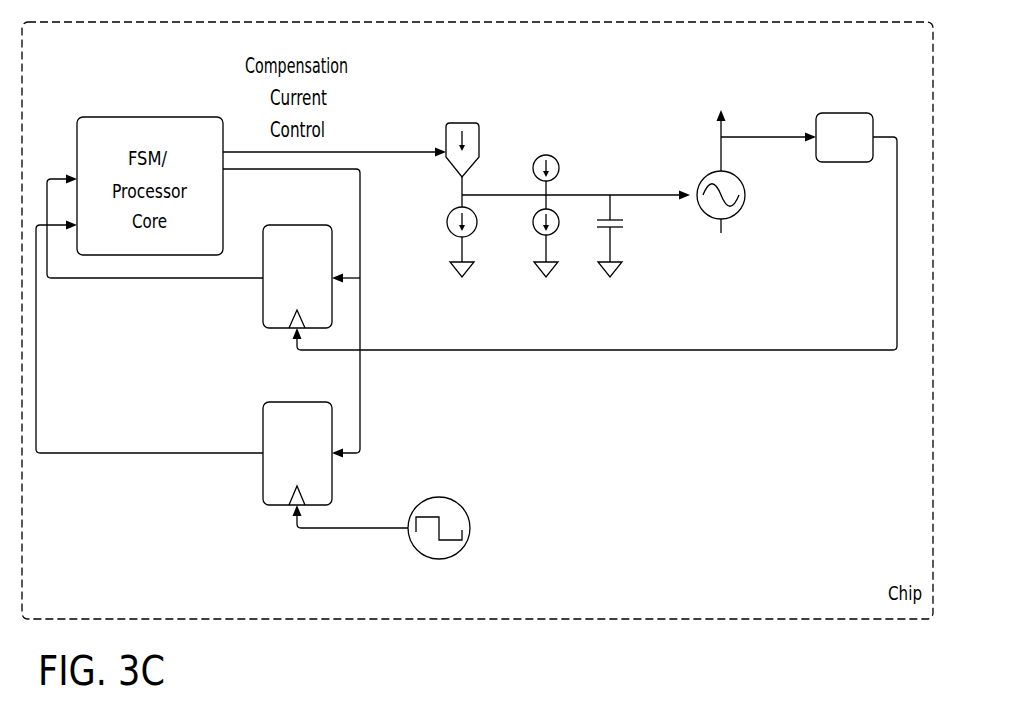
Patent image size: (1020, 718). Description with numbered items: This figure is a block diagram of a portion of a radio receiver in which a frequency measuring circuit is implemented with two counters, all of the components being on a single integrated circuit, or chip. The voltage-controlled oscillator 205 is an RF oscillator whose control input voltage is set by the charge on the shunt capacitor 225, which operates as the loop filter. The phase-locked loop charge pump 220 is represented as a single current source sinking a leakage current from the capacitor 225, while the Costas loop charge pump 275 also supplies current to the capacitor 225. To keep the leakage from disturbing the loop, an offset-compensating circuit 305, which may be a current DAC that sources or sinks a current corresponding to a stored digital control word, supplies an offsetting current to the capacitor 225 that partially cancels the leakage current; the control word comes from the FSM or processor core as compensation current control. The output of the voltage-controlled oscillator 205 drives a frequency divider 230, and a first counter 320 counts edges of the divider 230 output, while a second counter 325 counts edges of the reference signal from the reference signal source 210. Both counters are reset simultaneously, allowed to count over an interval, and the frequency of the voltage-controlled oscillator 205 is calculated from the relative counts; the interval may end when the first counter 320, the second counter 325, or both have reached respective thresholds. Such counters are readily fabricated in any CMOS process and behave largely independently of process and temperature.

The voltage-controlled oscillator 205 is at (740, 216).
The reference signal source 210 is at (438, 560).
The phase-locked loop charge pump 220 is at (450, 233).
The shunt capacitor 225 is at (624, 229).
The frequency divider 230 is at (845, 113).
The Costas loop charge pump 275 is at (568, 155).
The offset-compensating circuit 305 is at (461, 122).
The first counter 320 is at (263, 303).
The second counter 325 is at (263, 480).